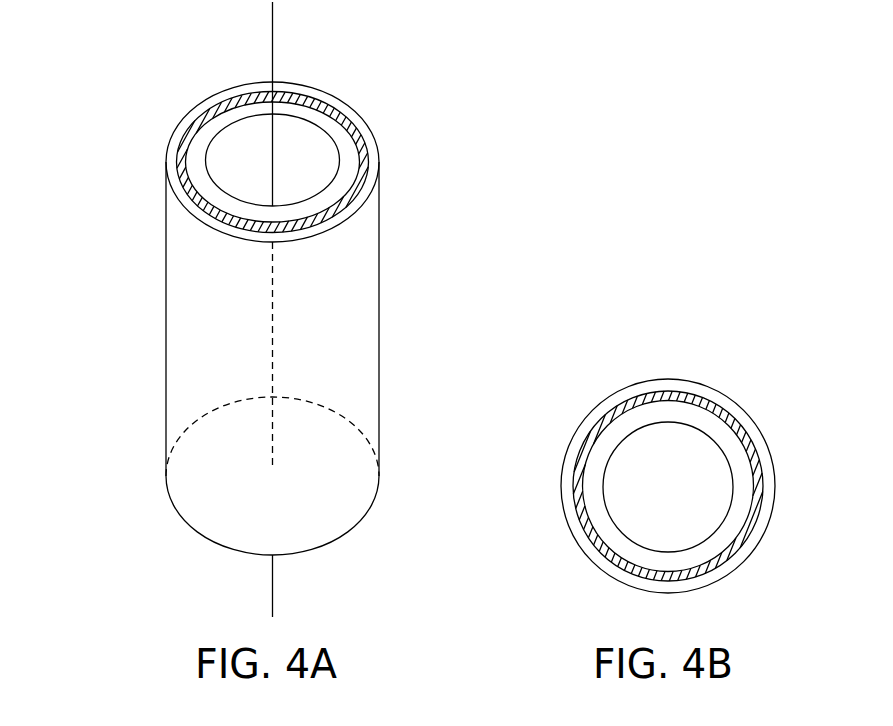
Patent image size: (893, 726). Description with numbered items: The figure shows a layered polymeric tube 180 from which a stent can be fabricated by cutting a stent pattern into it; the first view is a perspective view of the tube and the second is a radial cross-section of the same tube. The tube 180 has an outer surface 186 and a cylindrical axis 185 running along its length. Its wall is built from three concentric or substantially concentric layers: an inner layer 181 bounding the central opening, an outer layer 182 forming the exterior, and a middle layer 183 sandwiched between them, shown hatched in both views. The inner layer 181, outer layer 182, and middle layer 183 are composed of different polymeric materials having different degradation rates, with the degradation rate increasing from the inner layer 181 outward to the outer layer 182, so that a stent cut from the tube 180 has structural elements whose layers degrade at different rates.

In FIG. 4A, the layered polymeric tube 180 is at (149, 42).
In FIG. 4A, the inner layer 181 is at (329, 123).
In FIG. 4B, the inner layer 181 is at (700, 423).
In FIG. 4A, the outer layer 182 is at (372, 178).
In FIG. 4B, the outer layer 182 is at (767, 467).
In FIG. 4A, the middle layer 183 is at (358, 128).
In FIG. 4B, the middle layer 183 is at (745, 437).
In FIG. 4A, the cylindrical axis 185 is at (270, 307).
In FIG. 4A, the outer surface 186 is at (361, 296).